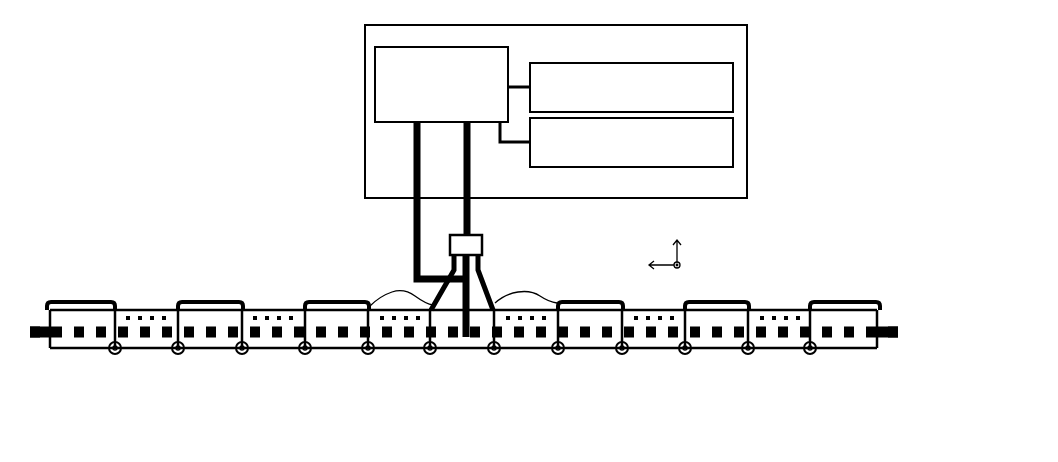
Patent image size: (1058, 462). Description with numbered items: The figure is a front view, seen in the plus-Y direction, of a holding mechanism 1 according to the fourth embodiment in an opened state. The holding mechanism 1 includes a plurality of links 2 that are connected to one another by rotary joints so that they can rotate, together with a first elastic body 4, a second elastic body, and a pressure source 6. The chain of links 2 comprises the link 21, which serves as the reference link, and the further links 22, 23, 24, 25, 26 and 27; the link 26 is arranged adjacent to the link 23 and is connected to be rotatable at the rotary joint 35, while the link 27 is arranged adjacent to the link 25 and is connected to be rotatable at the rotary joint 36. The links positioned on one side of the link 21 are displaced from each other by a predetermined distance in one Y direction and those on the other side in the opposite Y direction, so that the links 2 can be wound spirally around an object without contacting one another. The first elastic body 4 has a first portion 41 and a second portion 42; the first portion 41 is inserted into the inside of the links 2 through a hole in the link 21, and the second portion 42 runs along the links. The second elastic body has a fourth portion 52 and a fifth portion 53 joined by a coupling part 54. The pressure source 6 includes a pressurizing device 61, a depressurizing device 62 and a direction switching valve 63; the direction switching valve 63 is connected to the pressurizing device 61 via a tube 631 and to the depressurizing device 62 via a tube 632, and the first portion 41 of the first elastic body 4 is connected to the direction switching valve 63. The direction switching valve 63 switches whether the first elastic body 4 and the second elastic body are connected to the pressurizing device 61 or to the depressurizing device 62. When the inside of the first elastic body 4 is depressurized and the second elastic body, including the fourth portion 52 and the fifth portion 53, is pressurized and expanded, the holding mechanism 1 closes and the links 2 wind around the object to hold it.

The holding mechanism 1 is at (824, 196).
The links 2 is at (274, 295).
The first elastic body 4 is at (384, 230).
The pressure source 6 is at (365, 148).
The link 21 is at (462, 350).
The link 22 is at (400, 350).
The link 23 is at (336, 350).
The link 24 is at (527, 350).
The link 25 is at (590, 350).
The link 26 is at (282, 350).
The link 27 is at (662, 344).
The rotary joint 35 is at (303, 354).
The rotary joint 36 is at (620, 355).
The first portion 41 is at (414, 229).
The second portion 42 is at (262, 349).
The fourth portion 52 is at (398, 310).
The fifth portion 53 is at (523, 310).
The coupling part 54 is at (482, 243).
The pressurizing device 61 is at (745, 93).
The depressurizing device 62 is at (745, 138).
The direction switching valve 63 is at (375, 80).
The tube 631 is at (520, 86).
The tube 632 is at (509, 144).